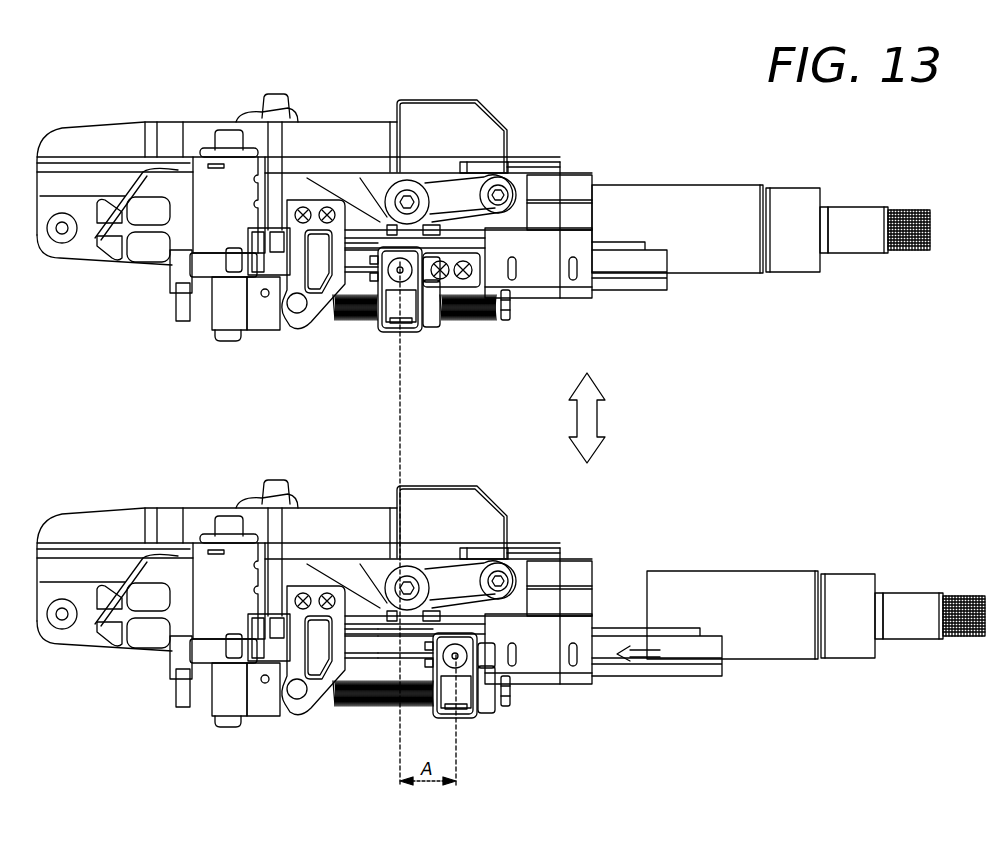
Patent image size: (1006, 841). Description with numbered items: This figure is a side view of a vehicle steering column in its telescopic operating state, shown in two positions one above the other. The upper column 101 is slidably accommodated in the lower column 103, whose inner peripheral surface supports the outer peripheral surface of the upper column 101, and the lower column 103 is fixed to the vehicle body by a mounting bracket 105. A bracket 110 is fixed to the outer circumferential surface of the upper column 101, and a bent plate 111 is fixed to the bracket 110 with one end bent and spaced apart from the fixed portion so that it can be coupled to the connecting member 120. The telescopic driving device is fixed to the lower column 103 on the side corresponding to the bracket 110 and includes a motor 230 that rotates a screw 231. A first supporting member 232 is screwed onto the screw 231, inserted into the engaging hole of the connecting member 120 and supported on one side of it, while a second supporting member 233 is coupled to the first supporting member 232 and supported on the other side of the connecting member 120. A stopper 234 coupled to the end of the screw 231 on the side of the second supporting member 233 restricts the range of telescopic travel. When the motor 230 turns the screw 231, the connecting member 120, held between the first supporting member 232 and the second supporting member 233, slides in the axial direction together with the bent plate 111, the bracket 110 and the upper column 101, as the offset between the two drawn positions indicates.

The upper column 101 is at (730, 192).
The lower column 103 is at (576, 178).
The mounting bracket 105 is at (456, 118).
The bracket 110 is at (637, 288).
The bent plate 111 is at (605, 655).
The connecting member 120 is at (387, 333).
The motor 230 is at (210, 208).
The screw 231 is at (345, 315).
The first supporting member 232 is at (373, 318).
The second supporting member 233 is at (433, 327).
The stopper 234 is at (507, 312).